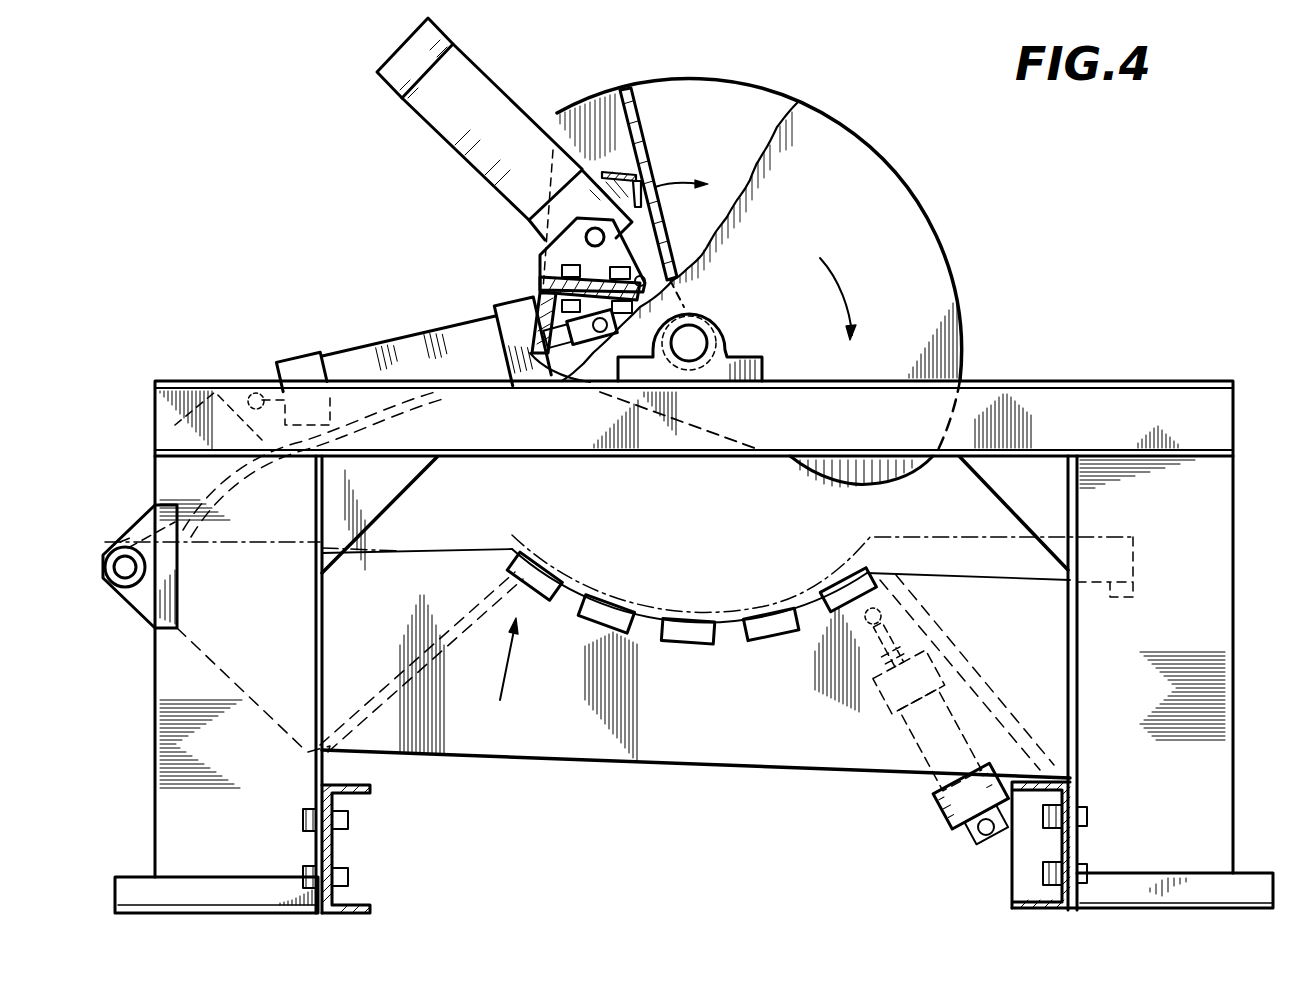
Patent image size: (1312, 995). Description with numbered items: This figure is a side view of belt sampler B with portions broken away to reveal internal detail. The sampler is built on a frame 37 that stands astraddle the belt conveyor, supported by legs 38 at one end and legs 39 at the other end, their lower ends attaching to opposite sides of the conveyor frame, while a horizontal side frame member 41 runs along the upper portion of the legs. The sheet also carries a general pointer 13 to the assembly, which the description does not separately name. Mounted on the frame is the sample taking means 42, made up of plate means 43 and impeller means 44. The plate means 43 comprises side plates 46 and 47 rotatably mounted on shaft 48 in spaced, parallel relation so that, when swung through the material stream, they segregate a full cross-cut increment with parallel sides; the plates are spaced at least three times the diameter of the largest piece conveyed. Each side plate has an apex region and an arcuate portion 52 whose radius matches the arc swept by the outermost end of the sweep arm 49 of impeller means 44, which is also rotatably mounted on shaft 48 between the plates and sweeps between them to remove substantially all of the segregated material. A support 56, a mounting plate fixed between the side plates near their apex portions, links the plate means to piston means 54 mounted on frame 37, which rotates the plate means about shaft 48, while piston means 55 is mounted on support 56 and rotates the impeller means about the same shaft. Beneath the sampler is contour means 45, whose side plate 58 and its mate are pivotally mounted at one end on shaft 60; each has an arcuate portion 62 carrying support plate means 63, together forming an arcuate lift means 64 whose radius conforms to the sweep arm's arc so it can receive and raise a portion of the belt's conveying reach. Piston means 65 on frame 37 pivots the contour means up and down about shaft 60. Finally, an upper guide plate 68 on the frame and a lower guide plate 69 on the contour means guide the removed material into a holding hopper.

The apparatus frame 13 is at (1158, 350).
The frame 37 is at (1236, 424).
The legs 38 is at (1220, 543).
The legs 39 is at (160, 660).
The horizontal side frame member 41 is at (1088, 352).
The sample taking means 42 is at (962, 232).
The plate means 43 is at (962, 286).
The impeller means 44 is at (643, 133).
The contour means 45 is at (618, 763).
The side plate 46 is at (885, 190).
The side plate 47 is at (740, 97).
The shaft 48 is at (695, 345).
The sweep arm 49 is at (640, 110).
The arcuate portion 52 is at (880, 110).
The piston means 54 is at (390, 345).
The piston means 55 is at (495, 100).
The support 56 is at (545, 300).
The side plate 58 is at (748, 754).
The shaft 60 is at (120, 570).
The arcuate portion 62 is at (645, 622).
The support plate means 63 is at (770, 642).
The lift means 64 is at (742, 622).
The piston means 65 is at (945, 800).
The upper guide plate 68 is at (345, 430).
The lower guide plate 69 is at (395, 672).